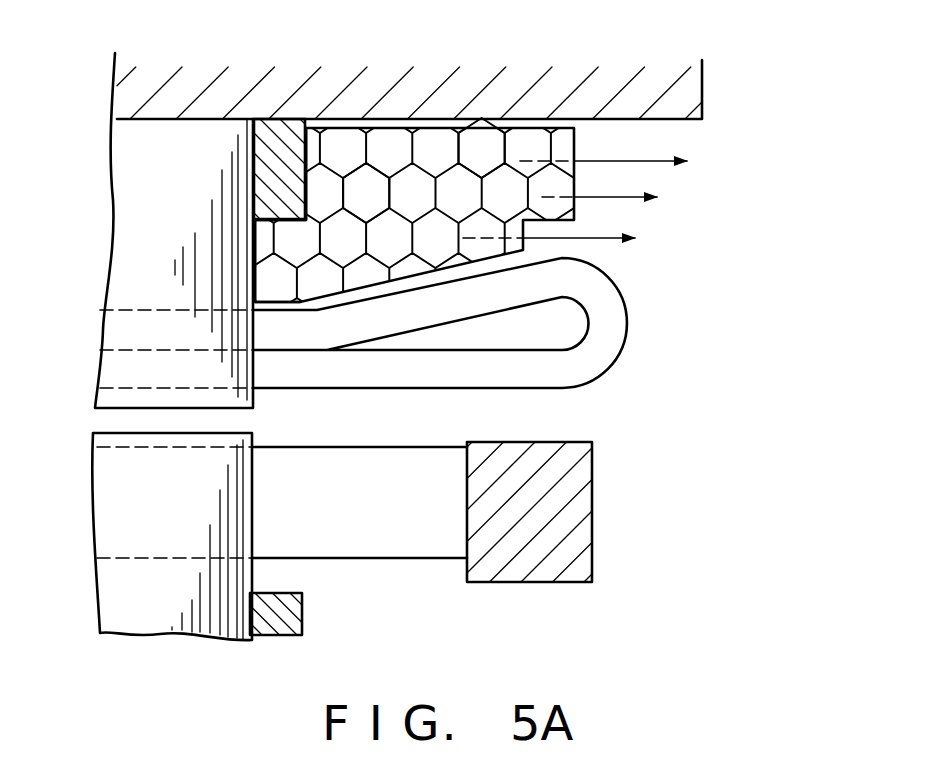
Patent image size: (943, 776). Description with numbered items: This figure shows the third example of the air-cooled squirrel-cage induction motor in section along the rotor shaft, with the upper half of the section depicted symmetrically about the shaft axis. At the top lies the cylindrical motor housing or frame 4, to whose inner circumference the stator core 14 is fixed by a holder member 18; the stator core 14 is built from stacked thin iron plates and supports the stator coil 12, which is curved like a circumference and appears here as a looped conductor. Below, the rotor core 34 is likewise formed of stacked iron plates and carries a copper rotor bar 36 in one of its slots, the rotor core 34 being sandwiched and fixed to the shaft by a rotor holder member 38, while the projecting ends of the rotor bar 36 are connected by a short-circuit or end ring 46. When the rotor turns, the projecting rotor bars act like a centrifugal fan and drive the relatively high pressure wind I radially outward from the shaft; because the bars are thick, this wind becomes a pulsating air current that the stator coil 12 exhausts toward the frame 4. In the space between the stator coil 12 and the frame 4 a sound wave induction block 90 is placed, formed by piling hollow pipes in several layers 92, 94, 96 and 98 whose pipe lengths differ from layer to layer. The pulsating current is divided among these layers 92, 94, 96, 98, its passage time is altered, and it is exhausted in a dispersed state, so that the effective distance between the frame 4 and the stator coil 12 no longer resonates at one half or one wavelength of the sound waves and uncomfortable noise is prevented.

The motor housing or frame 4 is at (422, 88).
The stator coil 12 is at (622, 298).
The stator core 14 is at (160, 133).
The holder member 18 is at (272, 128).
The rotor core 34 is at (115, 484).
The rotor bar 36 is at (432, 552).
The rotor holder member 38 is at (303, 613).
The short-circuit or end ring 46 is at (592, 497).
The sound wave induction block 90 is at (583, 150).
The layer of pipes 92 is at (274, 270).
The layer of pipes 94 is at (283, 231).
The layer of pipes 96 is at (355, 187).
The layer of pipes 98 is at (485, 152).
The high pressure wind I is at (410, 283).